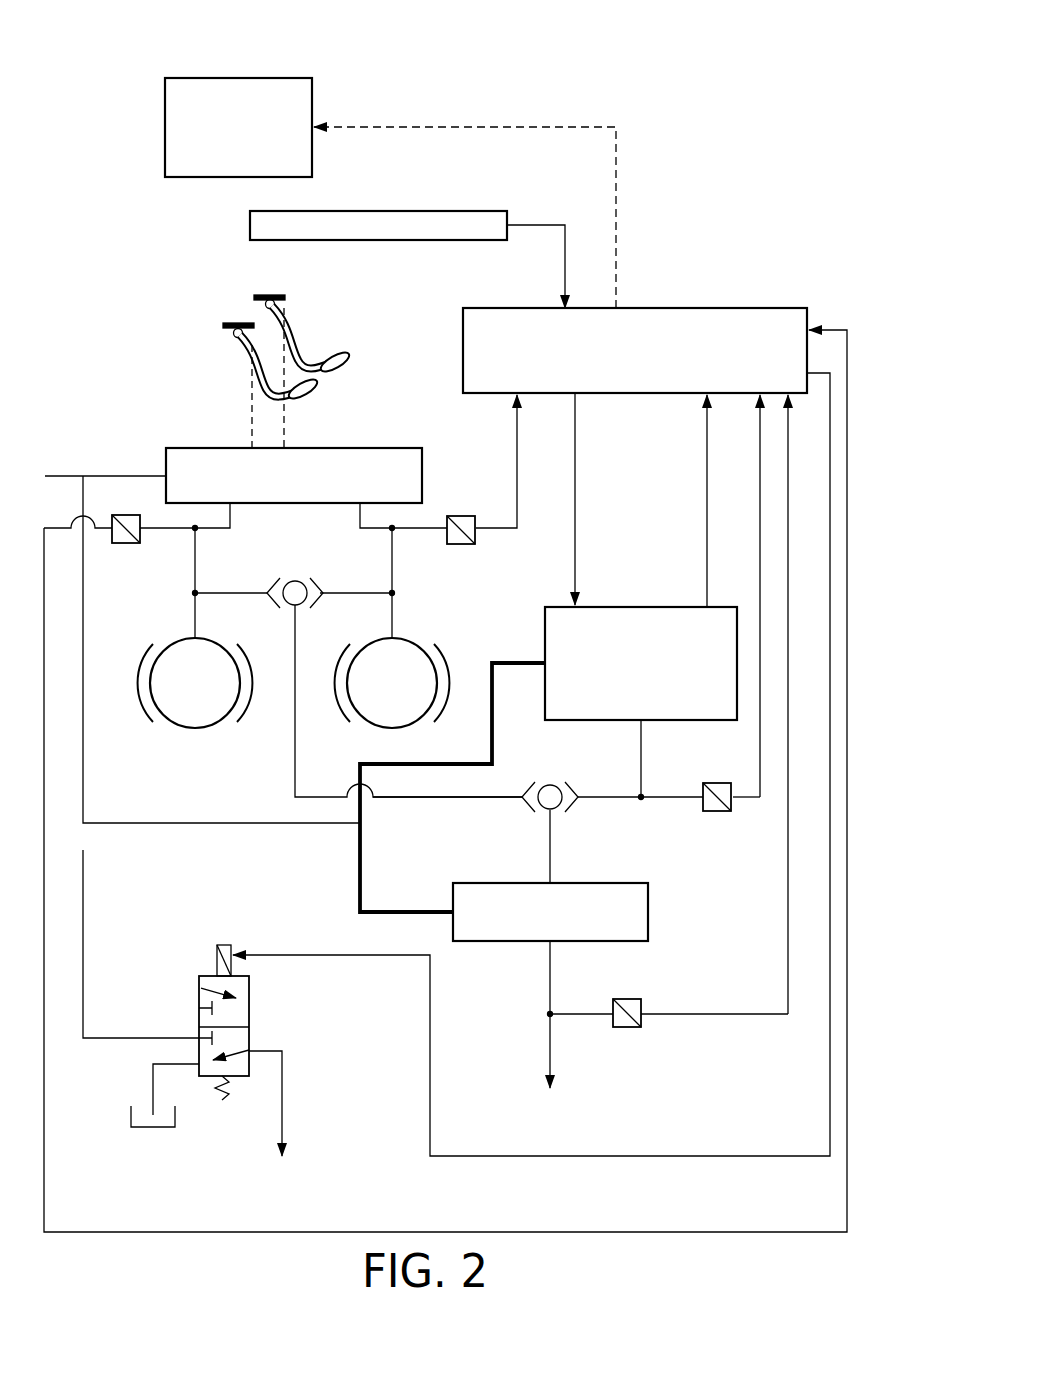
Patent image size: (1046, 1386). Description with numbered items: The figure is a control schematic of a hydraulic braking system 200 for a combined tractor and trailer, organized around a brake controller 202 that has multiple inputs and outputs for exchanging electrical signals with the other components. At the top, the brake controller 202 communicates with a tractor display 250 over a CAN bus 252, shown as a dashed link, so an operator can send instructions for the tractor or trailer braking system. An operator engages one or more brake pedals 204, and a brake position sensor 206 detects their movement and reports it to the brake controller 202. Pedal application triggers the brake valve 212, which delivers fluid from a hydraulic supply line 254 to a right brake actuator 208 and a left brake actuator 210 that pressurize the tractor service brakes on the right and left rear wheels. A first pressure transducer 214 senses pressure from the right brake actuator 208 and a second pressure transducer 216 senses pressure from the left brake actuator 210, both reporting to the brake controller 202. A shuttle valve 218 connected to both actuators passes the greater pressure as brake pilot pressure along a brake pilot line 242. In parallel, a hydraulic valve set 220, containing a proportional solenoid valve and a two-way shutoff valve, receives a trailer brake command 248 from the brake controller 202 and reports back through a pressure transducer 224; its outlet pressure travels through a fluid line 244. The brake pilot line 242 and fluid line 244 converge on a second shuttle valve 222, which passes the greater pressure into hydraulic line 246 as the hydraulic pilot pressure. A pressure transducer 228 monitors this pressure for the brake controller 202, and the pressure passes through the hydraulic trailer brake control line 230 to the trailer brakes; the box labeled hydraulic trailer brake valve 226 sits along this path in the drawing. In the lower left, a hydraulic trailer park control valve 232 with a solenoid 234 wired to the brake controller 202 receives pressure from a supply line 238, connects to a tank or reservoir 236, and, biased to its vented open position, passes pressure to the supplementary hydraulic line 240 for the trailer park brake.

The hydraulic braking system 200 is at (742, 120).
The brake controller 202 is at (695, 308).
The brake pedals 204 is at (254, 297).
The brake position sensor 206 is at (455, 211).
The right brake actuator 208 is at (195, 728).
The left brake actuator 210 is at (410, 637).
The brake valve 212 is at (362, 448).
The first pressure transducer 214 is at (126, 543).
The second pressure transducer 216 is at (460, 516).
The shuttle valve 218 is at (295, 580).
The hydraulic valve set 220 is at (635, 607).
The second shuttle valve 222 is at (548, 784).
The pressure transducer 224 is at (718, 812).
The hydraulic trailer brake valve 226 is at (648, 912).
The pressure transducer 228 is at (627, 1029).
The hydraulic trailer brake control line 230 is at (550, 1053).
The hydraulic trailer park control valve 232 is at (265, 995).
The solenoid 234 is at (216, 962).
The tank or reservoir 236 is at (148, 1127).
The supply line 238 is at (138, 1038).
The supplementary hydraulic line 240 is at (282, 1096).
The brake pilot line 242 is at (408, 800).
The fluid line 244 is at (605, 800).
The hydraulic line 246 is at (550, 845).
The trailer brake command 248 is at (575, 478).
The tractor display 250 is at (199, 78).
The CAN bus 252 is at (365, 127).
The hydraulic supply line 254 is at (62, 476).